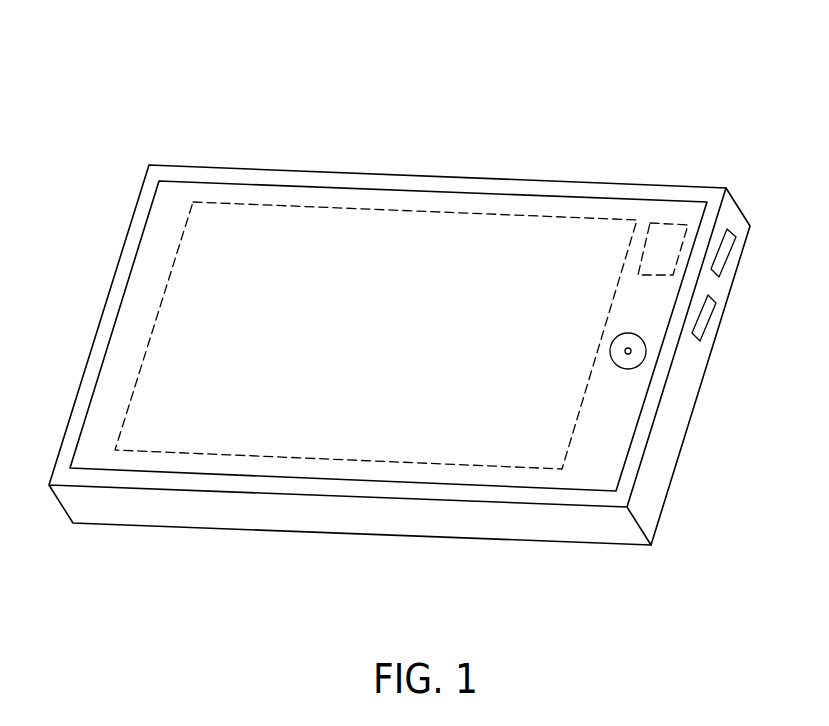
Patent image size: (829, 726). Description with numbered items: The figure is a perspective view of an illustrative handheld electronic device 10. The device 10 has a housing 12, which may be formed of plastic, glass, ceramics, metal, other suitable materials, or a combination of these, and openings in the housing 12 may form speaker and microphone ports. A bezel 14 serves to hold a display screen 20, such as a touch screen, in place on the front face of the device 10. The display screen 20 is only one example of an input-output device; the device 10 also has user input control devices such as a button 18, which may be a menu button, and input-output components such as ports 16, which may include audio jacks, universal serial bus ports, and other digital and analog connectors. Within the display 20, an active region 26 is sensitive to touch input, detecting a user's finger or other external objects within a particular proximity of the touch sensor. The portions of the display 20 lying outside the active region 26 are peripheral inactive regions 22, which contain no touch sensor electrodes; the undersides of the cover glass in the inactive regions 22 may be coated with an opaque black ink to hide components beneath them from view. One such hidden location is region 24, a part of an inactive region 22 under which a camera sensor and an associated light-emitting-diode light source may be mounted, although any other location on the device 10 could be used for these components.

The electronic device 10 is at (731, 62).
The housing 12 is at (648, 495).
The bezel 14 is at (702, 194).
The ports 16 is at (729, 255).
The button 18 is at (647, 357).
The display screen 20 is at (319, 186).
The inactive regions 22 is at (462, 202).
The region 24 is at (678, 221).
The active region 26 is at (436, 464).